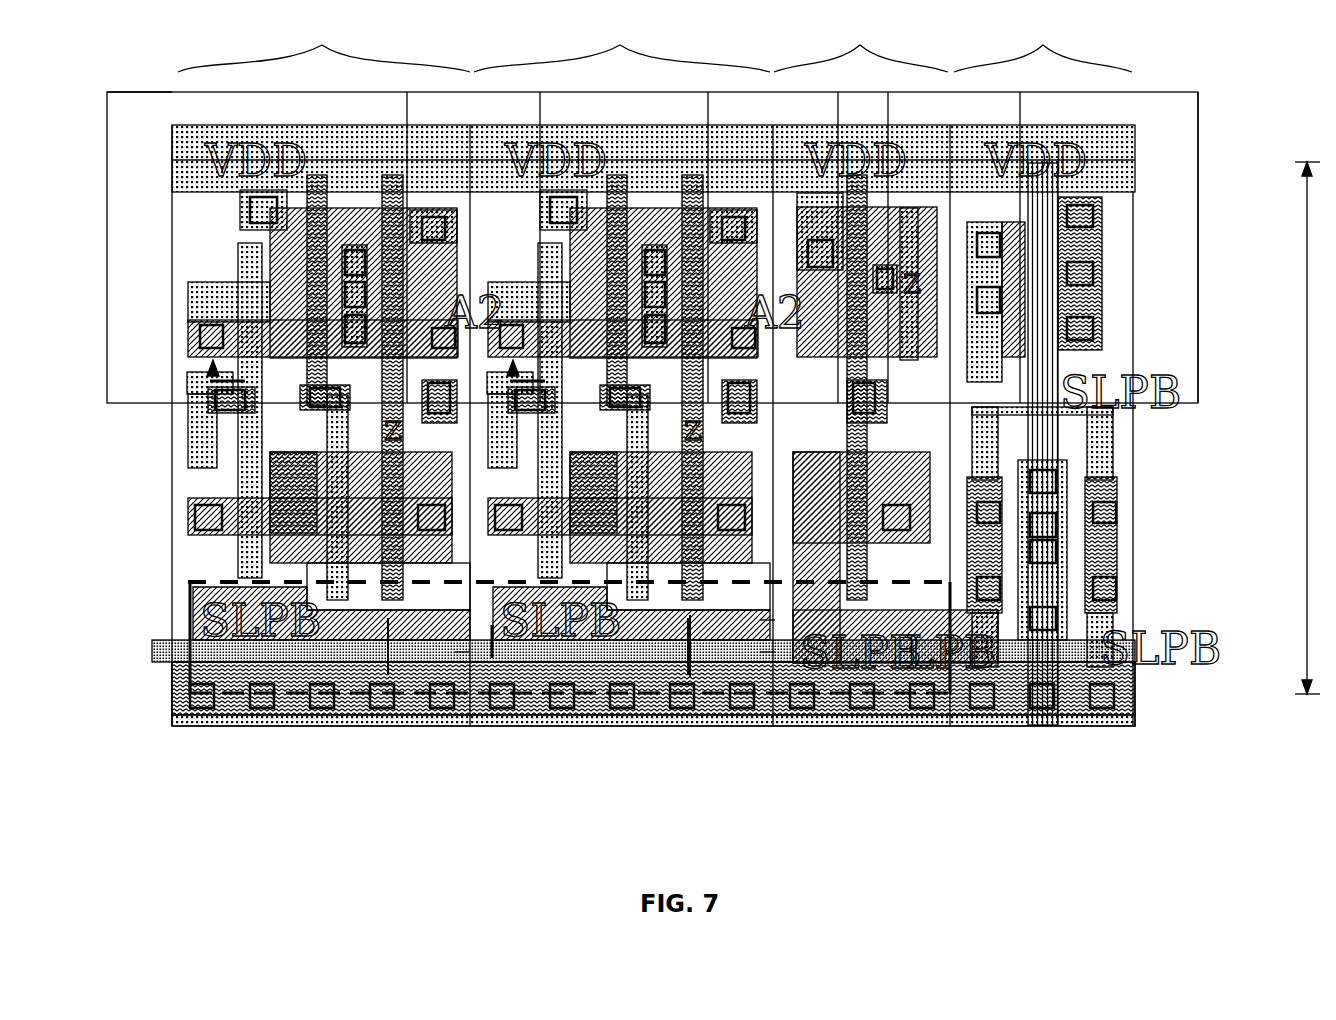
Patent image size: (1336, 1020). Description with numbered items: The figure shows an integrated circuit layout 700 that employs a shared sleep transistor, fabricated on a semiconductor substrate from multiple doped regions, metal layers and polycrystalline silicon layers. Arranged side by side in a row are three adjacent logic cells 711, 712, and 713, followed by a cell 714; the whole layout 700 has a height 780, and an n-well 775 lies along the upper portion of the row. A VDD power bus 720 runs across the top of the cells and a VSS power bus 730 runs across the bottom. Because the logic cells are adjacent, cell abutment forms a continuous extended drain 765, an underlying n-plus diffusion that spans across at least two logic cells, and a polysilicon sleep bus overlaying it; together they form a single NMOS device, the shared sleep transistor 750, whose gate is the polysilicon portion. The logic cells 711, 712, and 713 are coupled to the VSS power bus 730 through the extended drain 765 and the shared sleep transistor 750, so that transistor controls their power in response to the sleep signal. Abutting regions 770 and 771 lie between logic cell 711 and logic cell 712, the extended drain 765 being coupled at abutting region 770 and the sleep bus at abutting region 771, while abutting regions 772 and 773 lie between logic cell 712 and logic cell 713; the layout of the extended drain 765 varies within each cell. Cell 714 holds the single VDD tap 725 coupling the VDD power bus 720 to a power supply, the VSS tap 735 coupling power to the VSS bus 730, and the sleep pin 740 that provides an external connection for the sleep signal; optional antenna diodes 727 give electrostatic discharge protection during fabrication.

The integrated circuit layout 700 is at (120, 54).
The logic cell 711 is at (324, 46).
The logic cell 712 is at (622, 46).
The logic cell 713 is at (861, 46).
The cell 714 is at (1043, 46).
The VDD power bus 720 is at (1137, 149).
The VDD tap 725 is at (1103, 224).
The antenna diodes 727 is at (1000, 258).
The VSS power bus 730 is at (1136, 720).
The VSS tap 735 is at (1058, 601).
The sleep pin 740 is at (1115, 443).
The shared sleep transistor 750 is at (348, 698).
The extended drain 765 is at (188, 604).
The abutting region 770 is at (152, 651).
The abutting region 771 is at (464, 653).
The abutting region 772 is at (768, 620).
The abutting region 773 is at (768, 653).
The n-well 775 is at (1200, 186).
The height 780 is at (1302, 296).